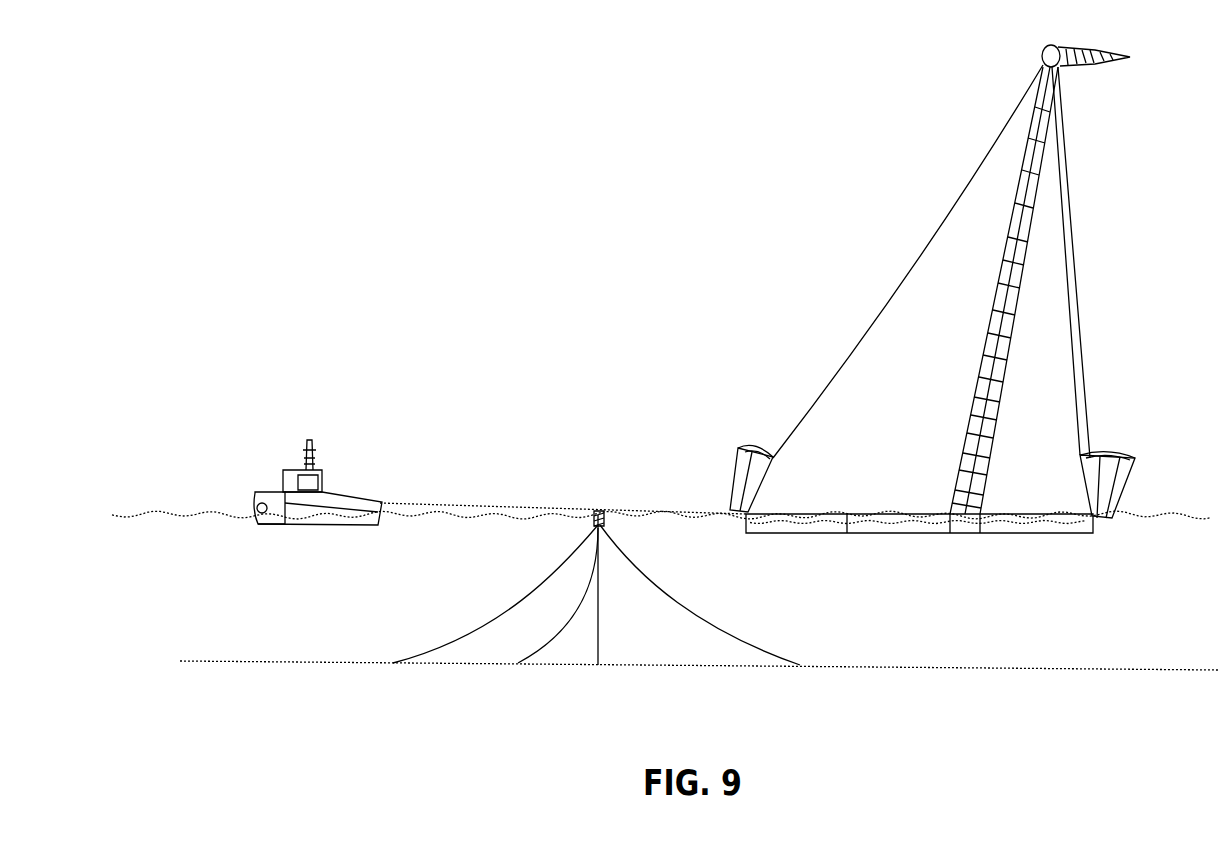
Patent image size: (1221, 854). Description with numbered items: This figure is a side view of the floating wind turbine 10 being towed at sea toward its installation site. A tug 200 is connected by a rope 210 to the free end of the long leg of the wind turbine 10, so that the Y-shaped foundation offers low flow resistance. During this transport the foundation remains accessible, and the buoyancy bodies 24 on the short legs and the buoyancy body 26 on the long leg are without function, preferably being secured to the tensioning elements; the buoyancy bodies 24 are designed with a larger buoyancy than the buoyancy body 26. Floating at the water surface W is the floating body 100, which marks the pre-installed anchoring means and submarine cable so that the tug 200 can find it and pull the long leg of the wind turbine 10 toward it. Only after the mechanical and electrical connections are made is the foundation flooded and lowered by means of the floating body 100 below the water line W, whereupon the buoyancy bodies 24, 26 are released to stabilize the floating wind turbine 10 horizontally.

The floating wind turbine 10 is at (847, 176).
The buoyancy body 24 is at (1125, 478).
The buoyancy body 26 is at (747, 475).
The floating body 100 is at (600, 525).
The tug 200 is at (273, 497).
The rope 210 is at (502, 508).
The water line W is at (637, 511).